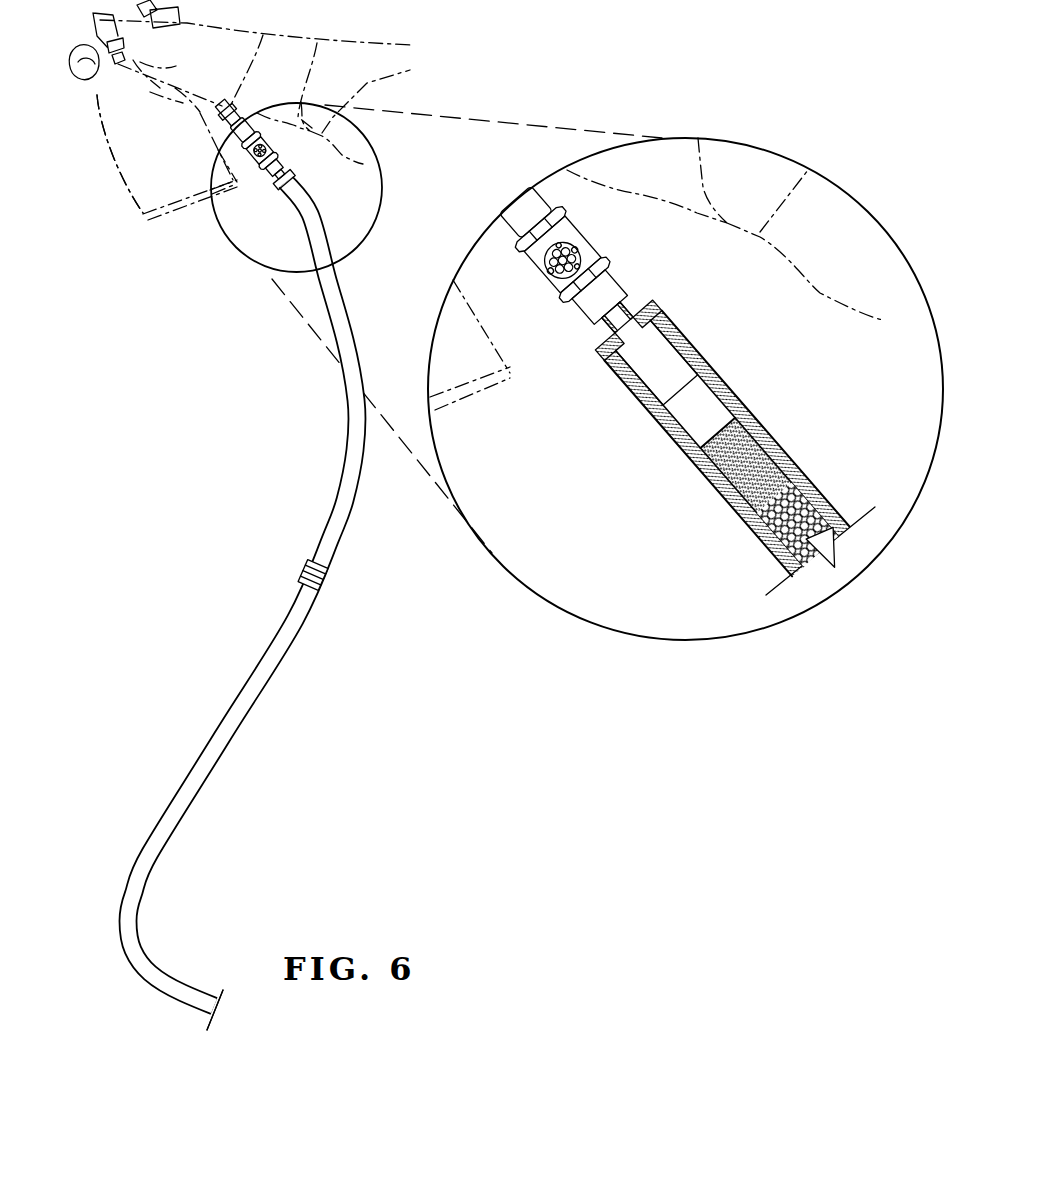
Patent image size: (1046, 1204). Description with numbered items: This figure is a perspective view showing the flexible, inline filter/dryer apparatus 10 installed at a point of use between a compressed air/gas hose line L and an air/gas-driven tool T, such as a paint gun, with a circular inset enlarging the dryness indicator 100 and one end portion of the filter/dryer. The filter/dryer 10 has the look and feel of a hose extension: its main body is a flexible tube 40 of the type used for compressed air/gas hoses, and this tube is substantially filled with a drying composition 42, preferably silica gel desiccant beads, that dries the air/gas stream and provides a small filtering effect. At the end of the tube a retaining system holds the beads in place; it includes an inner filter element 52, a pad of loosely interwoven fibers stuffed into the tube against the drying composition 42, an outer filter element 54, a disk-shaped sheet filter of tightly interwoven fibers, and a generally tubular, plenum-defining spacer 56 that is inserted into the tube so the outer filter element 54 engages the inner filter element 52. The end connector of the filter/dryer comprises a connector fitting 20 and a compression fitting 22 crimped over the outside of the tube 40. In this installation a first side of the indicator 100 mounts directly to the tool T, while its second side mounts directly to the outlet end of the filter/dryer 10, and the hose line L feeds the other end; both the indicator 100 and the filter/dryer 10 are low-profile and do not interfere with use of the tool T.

The filter/dryer apparatus 10 is at (330, 454).
The air/gas dryness indicator 100 is at (255, 186).
The connector fitting 20 is at (607, 347).
The compression fitting 22 is at (693, 333).
The flexible tube 40 is at (763, 412).
The drying composition 42 is at (822, 507).
The inner filter element 52 is at (730, 505).
The outer filter element 54 is at (687, 460).
The spacer 56 is at (660, 427).
The air/gas-driven tool T is at (102, 179).
The compressed air/gas hose line L is at (263, 750).